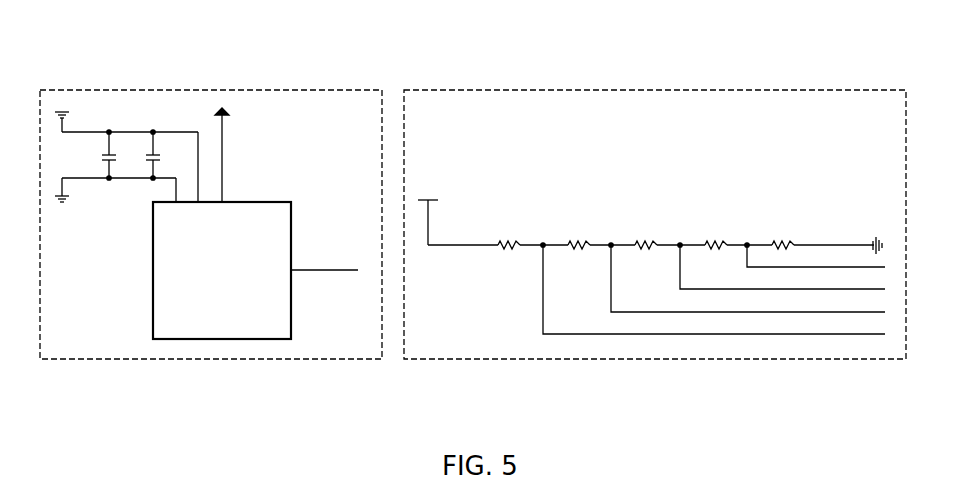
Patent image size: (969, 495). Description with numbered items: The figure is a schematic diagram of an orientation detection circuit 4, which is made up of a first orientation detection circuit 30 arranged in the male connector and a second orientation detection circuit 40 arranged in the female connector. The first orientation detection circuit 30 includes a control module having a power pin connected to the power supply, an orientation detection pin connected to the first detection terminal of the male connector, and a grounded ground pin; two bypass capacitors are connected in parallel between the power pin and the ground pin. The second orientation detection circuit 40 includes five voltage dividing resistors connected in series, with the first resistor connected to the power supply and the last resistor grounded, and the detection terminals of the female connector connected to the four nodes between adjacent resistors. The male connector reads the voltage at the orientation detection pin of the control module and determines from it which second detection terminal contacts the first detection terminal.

The orientation detection circuit 4 is at (382, 40).
The first orientation detection circuit 30 is at (210, 90).
The second orientation detection circuit 40 is at (655, 90).